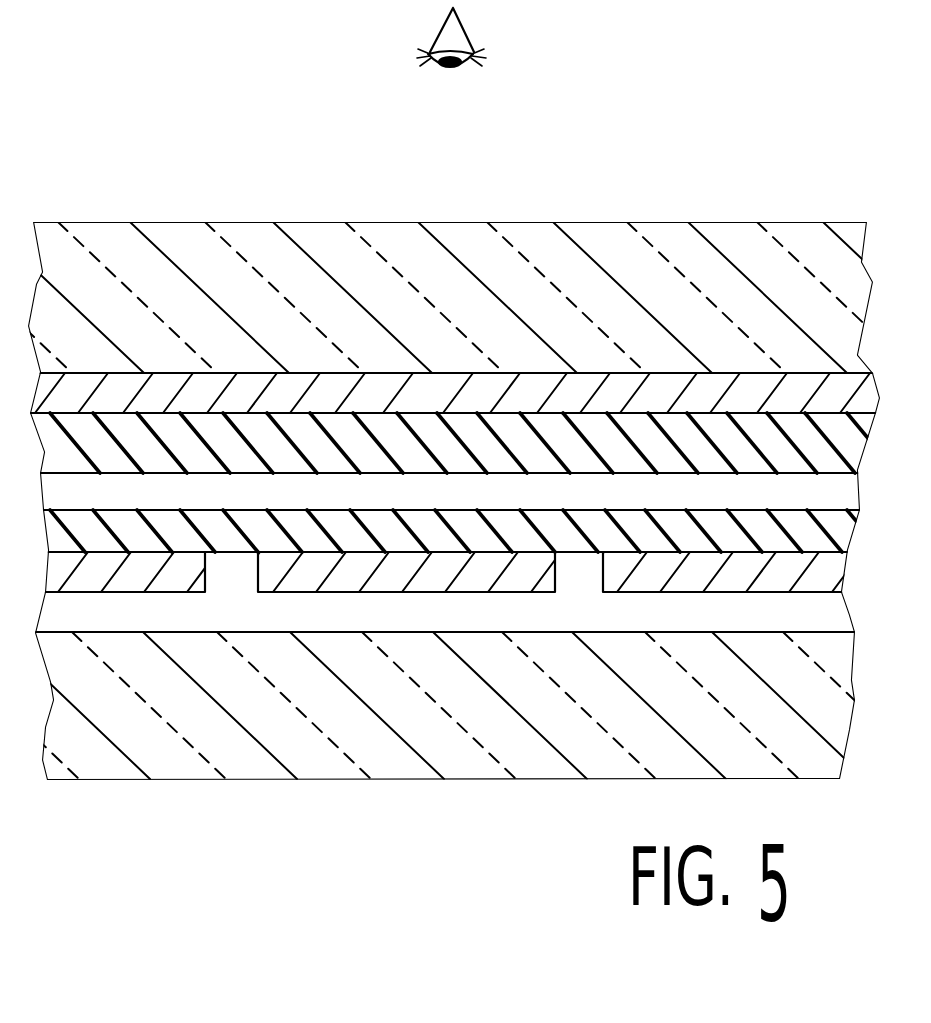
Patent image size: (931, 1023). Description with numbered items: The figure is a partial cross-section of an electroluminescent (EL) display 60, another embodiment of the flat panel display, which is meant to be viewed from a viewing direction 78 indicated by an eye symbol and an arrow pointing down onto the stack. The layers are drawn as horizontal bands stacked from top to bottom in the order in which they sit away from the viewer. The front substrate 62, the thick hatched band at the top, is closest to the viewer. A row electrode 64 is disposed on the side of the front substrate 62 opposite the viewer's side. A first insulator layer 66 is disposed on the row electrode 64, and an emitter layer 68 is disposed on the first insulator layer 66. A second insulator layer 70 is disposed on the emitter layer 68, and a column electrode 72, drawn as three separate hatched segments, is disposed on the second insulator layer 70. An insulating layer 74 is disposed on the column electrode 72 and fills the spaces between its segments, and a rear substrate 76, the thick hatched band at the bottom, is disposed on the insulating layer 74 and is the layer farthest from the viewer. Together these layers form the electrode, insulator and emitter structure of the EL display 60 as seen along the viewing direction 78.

The electroluminescent display 60 is at (128, 160).
The front substrate 62 is at (465, 297).
The row electrode 64 is at (466, 393).
The first insulator layer 66 is at (475, 443).
The emitter layer 68 is at (455, 492).
The second insulator layer 70 is at (471, 531).
The column electrode 72 is at (455, 572).
The insulating layer 74 is at (455, 613).
The rear substrate 76 is at (465, 705).
The viewing direction 78 is at (466, 82).